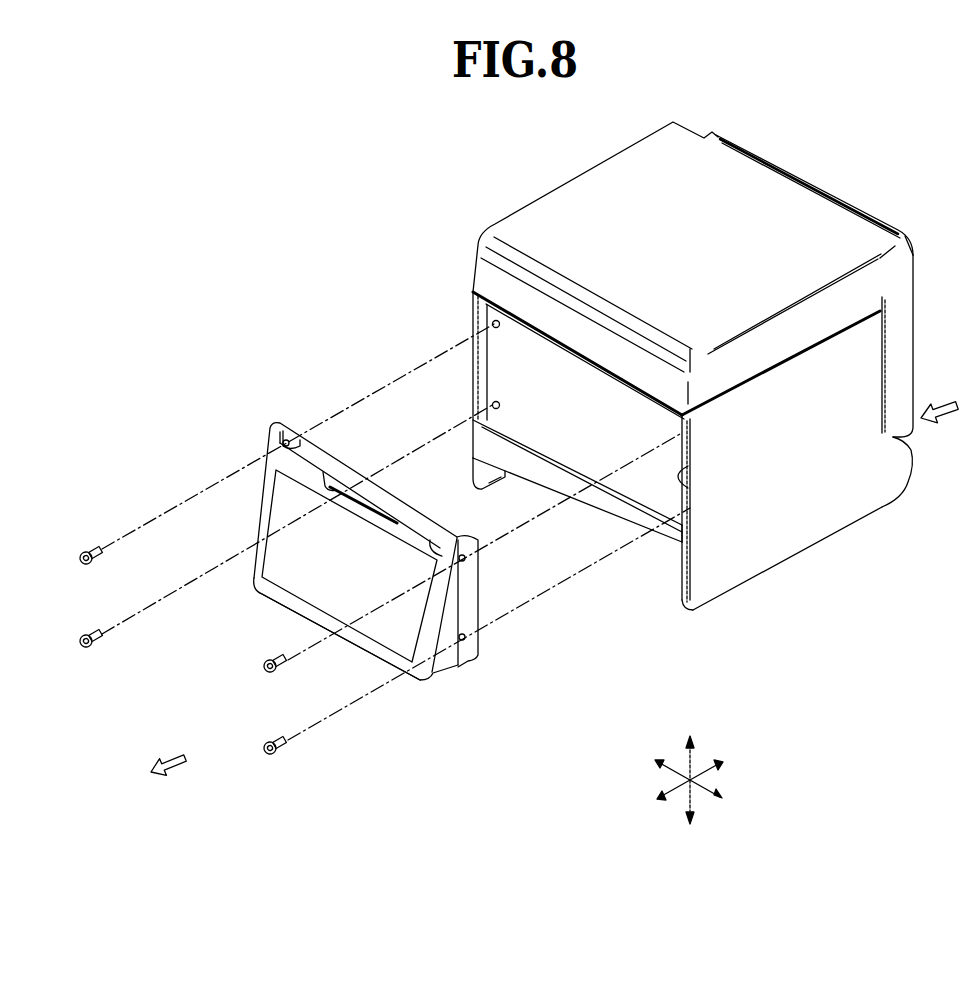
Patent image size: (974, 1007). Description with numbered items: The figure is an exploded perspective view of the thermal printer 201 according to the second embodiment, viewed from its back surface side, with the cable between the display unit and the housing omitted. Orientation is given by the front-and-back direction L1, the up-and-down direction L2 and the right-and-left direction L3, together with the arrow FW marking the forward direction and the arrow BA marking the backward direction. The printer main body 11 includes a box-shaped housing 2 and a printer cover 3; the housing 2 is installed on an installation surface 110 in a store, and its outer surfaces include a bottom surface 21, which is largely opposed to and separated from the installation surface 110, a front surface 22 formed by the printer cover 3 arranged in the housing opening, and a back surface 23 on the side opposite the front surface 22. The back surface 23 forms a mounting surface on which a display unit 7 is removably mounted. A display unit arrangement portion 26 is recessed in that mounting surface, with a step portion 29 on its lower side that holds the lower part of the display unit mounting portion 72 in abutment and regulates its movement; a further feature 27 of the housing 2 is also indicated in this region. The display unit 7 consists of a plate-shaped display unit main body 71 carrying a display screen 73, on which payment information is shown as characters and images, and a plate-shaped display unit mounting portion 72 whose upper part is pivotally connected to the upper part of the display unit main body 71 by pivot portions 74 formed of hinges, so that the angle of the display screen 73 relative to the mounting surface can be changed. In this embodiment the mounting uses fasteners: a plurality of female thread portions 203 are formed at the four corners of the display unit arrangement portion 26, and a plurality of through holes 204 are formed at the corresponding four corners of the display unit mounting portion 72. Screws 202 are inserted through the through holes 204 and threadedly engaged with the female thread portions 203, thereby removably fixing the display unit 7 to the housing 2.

The thermal printer 201 is at (550, 148).
The display unit arrangement portion 26 is at (560, 373).
The printer main body 11 is at (840, 185).
The front surface 22 is at (913, 263).
The printer cover 3 is at (920, 333).
The housing 2 is at (803, 535).
The bottom surface 21 is at (843, 535).
The recess 27 is at (690, 493).
The step portion 29 is at (673, 533).
The installation surface 110 is at (572, 750).
The female thread portions 203 is at (481, 321).
The back surface 23 is at (480, 322).
The through holes 204 is at (283, 443).
The pivot portions 74 is at (299, 467).
The display screen 73 is at (297, 578).
The display unit 7 is at (278, 607).
The display unit mounting portion 72 is at (478, 640).
The display unit main body 71 is at (415, 682).
The screws 202 is at (86, 550).
The forward direction FW is at (930, 400).
The backward direction BA is at (180, 766).
The front-and-back direction L1 is at (700, 772).
The up-and-down direction L2 is at (687, 795).
The right-and-left direction L3 is at (700, 787).